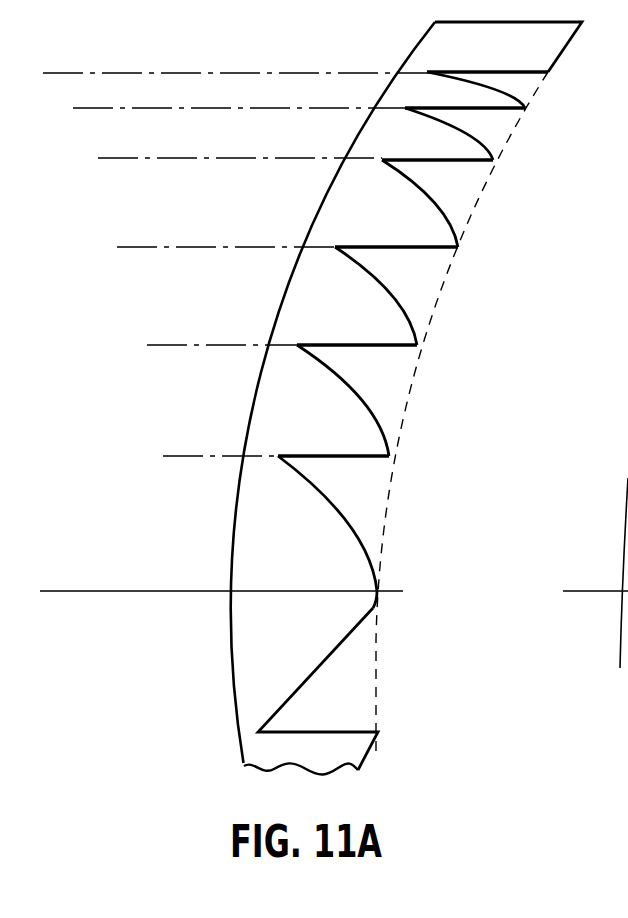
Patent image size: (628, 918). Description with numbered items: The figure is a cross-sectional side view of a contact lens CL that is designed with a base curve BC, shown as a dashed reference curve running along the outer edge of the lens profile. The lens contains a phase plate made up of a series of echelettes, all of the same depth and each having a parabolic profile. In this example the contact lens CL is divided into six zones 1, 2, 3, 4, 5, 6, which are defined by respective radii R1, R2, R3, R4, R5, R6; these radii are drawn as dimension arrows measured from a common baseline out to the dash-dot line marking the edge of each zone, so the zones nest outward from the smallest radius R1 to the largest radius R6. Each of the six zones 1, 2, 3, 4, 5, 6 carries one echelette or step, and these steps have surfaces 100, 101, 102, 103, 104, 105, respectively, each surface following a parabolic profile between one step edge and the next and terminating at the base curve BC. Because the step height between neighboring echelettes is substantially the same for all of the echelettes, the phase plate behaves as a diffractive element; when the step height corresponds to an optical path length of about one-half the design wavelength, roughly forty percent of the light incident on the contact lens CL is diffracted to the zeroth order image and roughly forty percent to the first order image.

The first zone 1 is at (303, 560).
The second zone 2 is at (314, 445).
The third zone 3 is at (364, 326).
The fourth zone 4 is at (385, 230).
The fifth zone 5 is at (414, 150).
The sixth zone 6 is at (429, 101).
The echelette surface 100 is at (354, 528).
The echelette surface 101 is at (367, 411).
The echelette surface 102 is at (396, 299).
The echelette surface 103 is at (437, 212).
The echelette surface 104 is at (477, 147).
The echelette surface 105 is at (510, 98).
The base curve BC is at (448, 287).
The contact lens CL is at (326, 302).
The radius of first zone R1 is at (189, 457).
The radius of second zone R2 is at (155, 346).
The radius of third zone R3 is at (130, 590).
The radius of fourth zone R4 is at (107, 590).
The radius of fifth zone R5 is at (81, 590).
The radius of sixth zone R6 is at (51, 74).